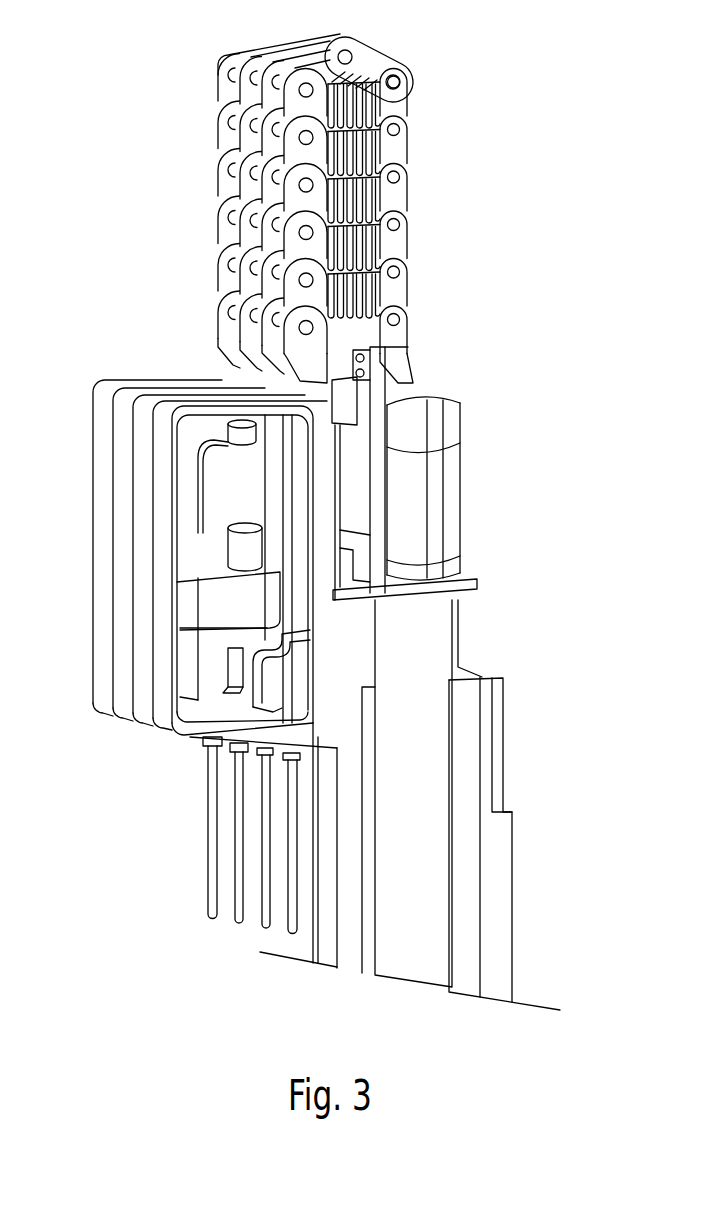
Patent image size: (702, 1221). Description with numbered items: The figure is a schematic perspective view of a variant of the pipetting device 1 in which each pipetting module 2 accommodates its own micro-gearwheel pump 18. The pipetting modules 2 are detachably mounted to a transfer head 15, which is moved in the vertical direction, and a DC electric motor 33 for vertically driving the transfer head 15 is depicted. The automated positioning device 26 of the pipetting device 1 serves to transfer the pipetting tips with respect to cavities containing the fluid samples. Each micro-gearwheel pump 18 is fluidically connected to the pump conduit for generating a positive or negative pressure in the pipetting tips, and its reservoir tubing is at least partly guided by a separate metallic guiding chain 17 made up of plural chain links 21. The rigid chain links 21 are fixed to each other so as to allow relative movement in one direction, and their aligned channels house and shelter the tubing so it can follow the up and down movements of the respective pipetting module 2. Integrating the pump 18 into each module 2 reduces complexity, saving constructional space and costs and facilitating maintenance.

The pipetting device 1 is at (128, 149).
The pipetting module 2 is at (160, 520).
The transfer head 15 is at (307, 737).
The guiding chain 17 is at (404, 84).
The micro-gearwheel pump 18 is at (230, 546).
The chain links 21 is at (398, 180).
The automated positioning device 26 is at (503, 757).
The DC electric motor 33 is at (448, 425).